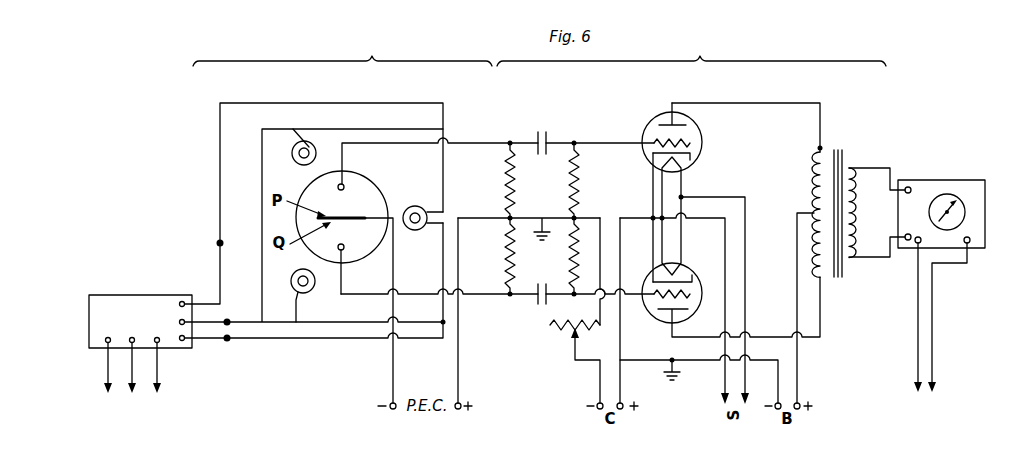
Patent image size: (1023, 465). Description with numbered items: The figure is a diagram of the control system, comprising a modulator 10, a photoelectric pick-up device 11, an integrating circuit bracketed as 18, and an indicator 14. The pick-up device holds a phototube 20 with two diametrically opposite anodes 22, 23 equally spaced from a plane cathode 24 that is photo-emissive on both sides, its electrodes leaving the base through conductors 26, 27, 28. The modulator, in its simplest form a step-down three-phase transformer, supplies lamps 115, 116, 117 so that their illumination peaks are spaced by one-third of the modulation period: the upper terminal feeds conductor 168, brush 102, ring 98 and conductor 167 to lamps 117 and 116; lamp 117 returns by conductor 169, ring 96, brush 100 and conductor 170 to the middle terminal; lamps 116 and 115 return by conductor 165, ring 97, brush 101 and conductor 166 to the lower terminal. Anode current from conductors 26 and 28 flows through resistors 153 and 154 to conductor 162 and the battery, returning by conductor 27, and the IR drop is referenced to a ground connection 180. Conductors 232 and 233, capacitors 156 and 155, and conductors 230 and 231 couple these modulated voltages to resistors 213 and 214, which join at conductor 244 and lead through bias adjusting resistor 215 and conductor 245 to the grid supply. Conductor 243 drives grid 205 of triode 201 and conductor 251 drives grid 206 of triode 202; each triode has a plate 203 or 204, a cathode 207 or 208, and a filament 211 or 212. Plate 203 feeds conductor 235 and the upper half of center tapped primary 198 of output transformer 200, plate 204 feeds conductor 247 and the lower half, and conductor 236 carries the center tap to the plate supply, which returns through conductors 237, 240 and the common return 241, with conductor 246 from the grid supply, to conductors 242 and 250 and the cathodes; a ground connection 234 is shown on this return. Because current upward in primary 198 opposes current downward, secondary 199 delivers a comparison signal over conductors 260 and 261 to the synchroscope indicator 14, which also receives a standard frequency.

The modulator 10 is at (136, 295).
The photoelectric pick-up device 11 is at (342, 50).
The indicator 14 is at (971, 184).
The amplifier unit 18 is at (691, 50).
The phototube 20 is at (368, 172).
The anode 22 is at (344, 189).
The anode 23 is at (344, 247).
The cathode 24 is at (340, 224).
The conductor 26 is at (398, 144).
The conductor 27 is at (395, 307).
The conductor 28 is at (360, 293).
The ring 96 is at (230, 318).
The ring 97 is at (230, 341).
The ring 98 is at (217, 240).
The brush 100 is at (229, 318).
The brush 101 is at (223, 342).
The brush 102 is at (214, 249).
The lamp 115 is at (294, 275).
The lamp 116 is at (424, 205).
The lamp 117 is at (298, 163).
The resistor 153 is at (505, 177).
The resistor 154 is at (505, 256).
The capacitor 155 is at (541, 305).
The capacitor 156 is at (540, 131).
The conductor 162 is at (458, 238).
The conductor 165 is at (296, 342).
The conductor 166 is at (203, 341).
The conductor 167 is at (272, 100).
The conductor 168 is at (220, 272).
The conductor 169 is at (262, 178).
The conductor 170 is at (205, 313).
The ground connection 180 is at (542, 212).
The center tapped primary 198 is at (814, 163).
The secondary 199 is at (862, 229).
The output transformer 200 is at (840, 150).
The triode 201 is at (656, 109).
The triode 202 is at (653, 313).
The plate 203 is at (694, 120).
The plate 204 is at (686, 314).
The grid 205 is at (700, 140).
The grid 206 is at (697, 297).
The cathode 207 is at (700, 153).
The cathode 208 is at (690, 276).
The filament 211 is at (700, 164).
The filament 212 is at (684, 262).
The resistor 213 is at (579, 162).
The resistor 214 is at (569, 256).
The bias adjusting resistor 215 is at (569, 365).
The conductor 230 is at (523, 140).
The conductor 231 is at (524, 299).
The conductor 232 is at (555, 139).
The conductor 233 is at (558, 321).
The ground connection 234 is at (678, 375).
The conductor 235 is at (784, 102).
The conductor 236 is at (796, 252).
The conductor 237 is at (777, 387).
The conductor 240 is at (632, 358).
The conductor 241 is at (620, 345).
The conductor 242 is at (651, 178).
The conductor 243 is at (593, 141).
The conductor 244 is at (597, 215).
The conductor 245 is at (600, 384).
The conductor 246 is at (620, 386).
The conductor 247 is at (767, 337).
The conductor 250 is at (653, 238).
The conductor 251 is at (629, 292).
The conductor 260 is at (875, 167).
The conductor 261 is at (875, 258).